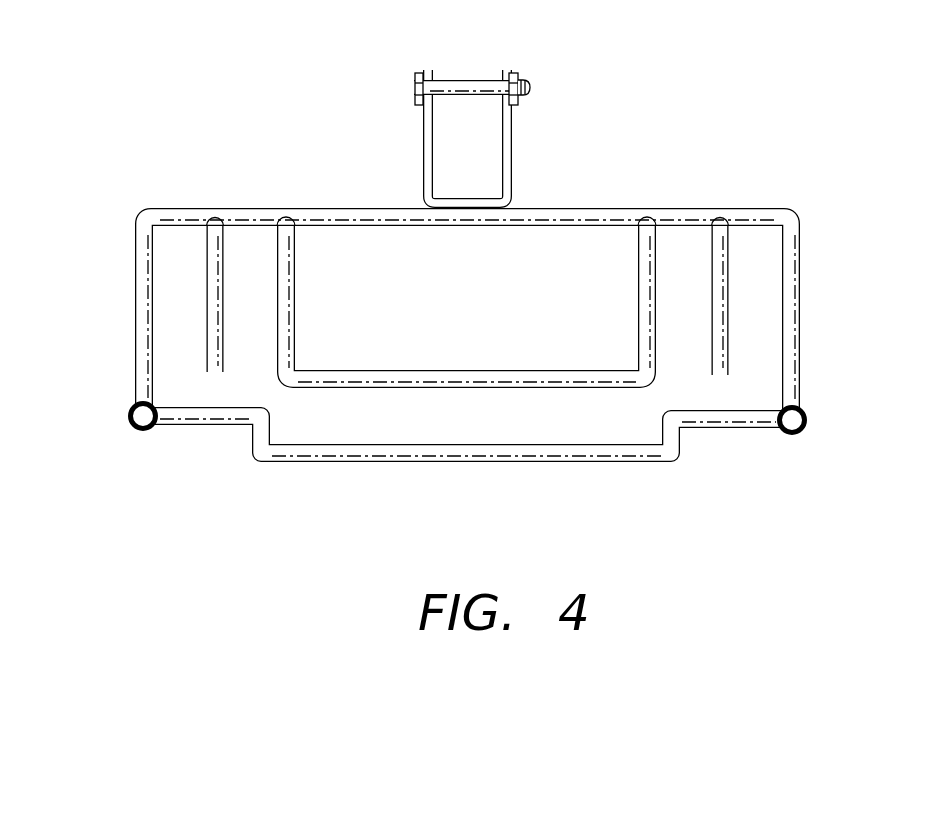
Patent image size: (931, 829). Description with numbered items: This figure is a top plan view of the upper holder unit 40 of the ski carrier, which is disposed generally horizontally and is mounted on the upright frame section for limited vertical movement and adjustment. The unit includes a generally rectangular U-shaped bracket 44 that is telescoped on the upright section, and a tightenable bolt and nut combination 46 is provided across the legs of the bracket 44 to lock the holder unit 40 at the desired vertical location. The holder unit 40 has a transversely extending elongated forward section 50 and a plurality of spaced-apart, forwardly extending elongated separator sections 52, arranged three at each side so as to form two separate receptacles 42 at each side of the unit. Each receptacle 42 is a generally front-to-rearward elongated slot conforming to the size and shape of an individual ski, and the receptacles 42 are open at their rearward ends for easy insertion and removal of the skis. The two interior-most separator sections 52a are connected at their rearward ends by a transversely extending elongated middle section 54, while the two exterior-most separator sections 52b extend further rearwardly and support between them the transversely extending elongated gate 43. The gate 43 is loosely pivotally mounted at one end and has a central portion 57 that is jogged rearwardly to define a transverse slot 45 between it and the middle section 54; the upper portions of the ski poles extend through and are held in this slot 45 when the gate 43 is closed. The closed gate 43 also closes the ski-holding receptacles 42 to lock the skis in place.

The upper holder unit 40 is at (466, 274).
The receptacles 42 is at (466, 266).
The gate 43 is at (717, 436).
The U-shaped bracket 44 is at (510, 160).
The transverse slot 45 is at (535, 415).
The bolt and nut combination 46 is at (463, 80).
The forward section 50 is at (637, 207).
The separator sections 52 is at (727, 313).
The interior-most separator sections 52a is at (466, 299).
The exterior-most separator sections 52b is at (135, 305).
The middle section 54 is at (402, 370).
The central portion 57 is at (467, 475).